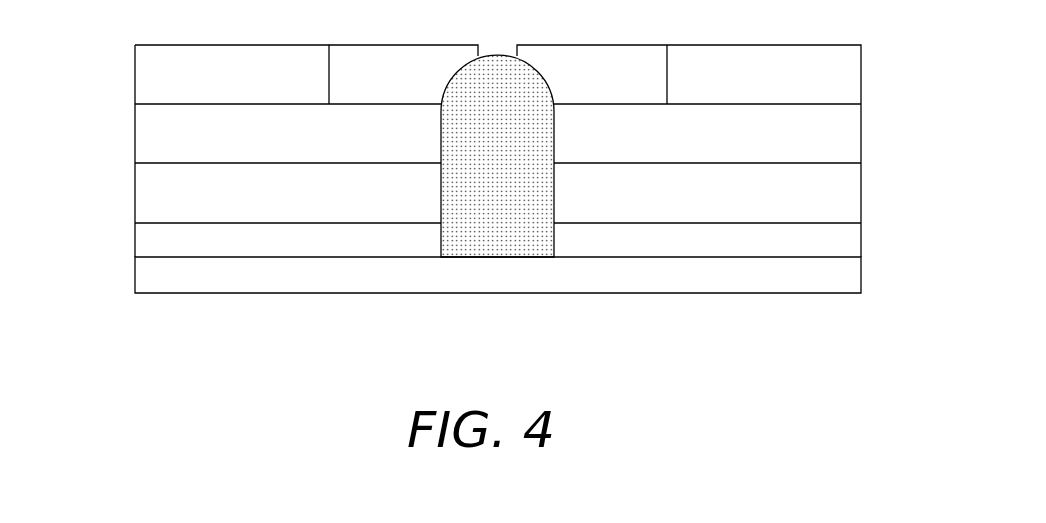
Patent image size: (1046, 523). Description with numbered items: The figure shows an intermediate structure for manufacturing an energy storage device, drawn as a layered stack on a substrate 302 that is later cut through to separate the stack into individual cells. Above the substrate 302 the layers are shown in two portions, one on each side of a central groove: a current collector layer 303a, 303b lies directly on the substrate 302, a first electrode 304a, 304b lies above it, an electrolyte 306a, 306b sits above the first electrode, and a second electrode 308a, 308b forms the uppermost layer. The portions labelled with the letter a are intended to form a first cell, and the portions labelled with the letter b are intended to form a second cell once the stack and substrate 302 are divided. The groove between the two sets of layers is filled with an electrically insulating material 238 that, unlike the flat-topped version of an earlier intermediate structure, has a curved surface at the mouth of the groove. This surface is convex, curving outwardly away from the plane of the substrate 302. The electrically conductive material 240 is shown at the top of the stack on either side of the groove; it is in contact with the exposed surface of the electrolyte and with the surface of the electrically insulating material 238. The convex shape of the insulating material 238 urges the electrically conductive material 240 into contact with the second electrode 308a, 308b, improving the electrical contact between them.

The substrate 302 is at (861, 285).
The current collector layer 303a is at (135, 248).
The current collector layer 303b is at (861, 245).
The first electrode 304a is at (135, 206).
The first electrode 304b is at (861, 201).
The electrolyte 306a is at (135, 146).
The electrolyte 306b is at (861, 143).
The second electrode 308a is at (135, 78).
The second electrode 308b is at (861, 78).
The electrically conductive material 240 is at (380, 45).
The electrically insulating material 238 is at (499, 257).